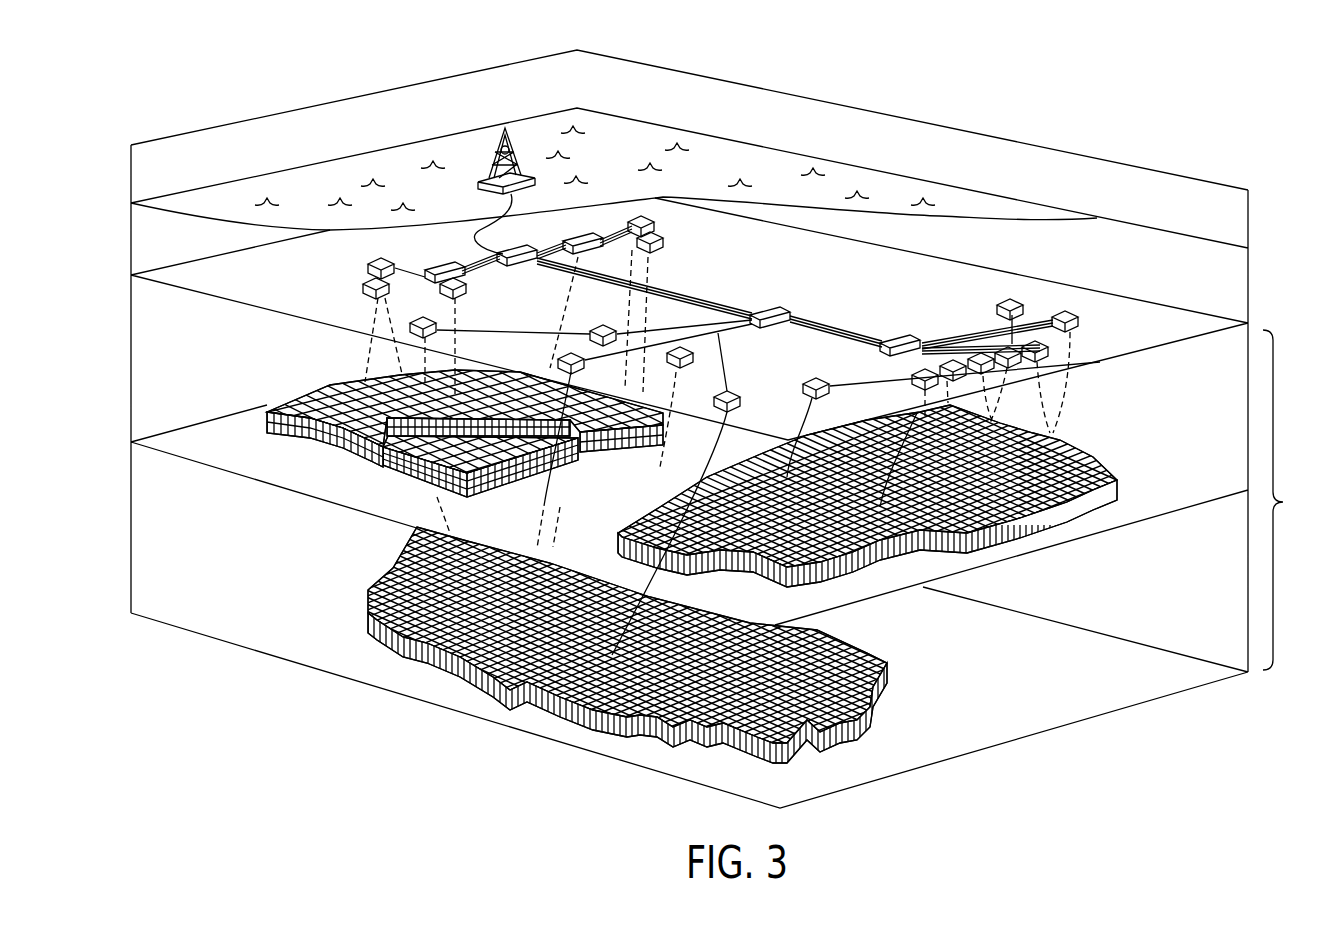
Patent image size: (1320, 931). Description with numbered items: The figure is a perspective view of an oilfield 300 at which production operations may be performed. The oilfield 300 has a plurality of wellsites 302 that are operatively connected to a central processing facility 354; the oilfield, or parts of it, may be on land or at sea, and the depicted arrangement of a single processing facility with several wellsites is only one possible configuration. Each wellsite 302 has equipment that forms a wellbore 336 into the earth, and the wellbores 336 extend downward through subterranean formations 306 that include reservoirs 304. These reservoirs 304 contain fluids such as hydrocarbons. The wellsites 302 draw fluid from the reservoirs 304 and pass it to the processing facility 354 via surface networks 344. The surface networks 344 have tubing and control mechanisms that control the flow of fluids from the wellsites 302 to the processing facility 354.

The oilfield 300 is at (197, 88).
The wellsite 302 is at (1073, 307).
The reservoir 304 is at (1006, 559).
The subterranean formation 306 is at (789, 441).
The wellbore 336 is at (1078, 391).
The surface network 344 is at (416, 288).
The central processing facility 354 is at (487, 147).